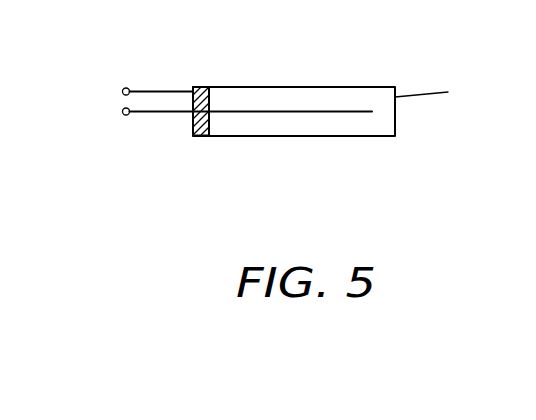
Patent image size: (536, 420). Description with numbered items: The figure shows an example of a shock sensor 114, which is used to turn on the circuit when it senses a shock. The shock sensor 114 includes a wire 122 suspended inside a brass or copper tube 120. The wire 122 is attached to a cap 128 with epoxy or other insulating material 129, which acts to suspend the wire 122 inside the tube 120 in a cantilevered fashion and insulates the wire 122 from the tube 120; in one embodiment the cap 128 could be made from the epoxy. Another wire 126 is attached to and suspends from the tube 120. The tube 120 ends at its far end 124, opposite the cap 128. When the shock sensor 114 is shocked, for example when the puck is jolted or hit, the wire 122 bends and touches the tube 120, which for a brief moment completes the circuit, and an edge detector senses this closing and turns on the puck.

The shock sensor 114 is at (413, 143).
The tube 120 is at (352, 87).
The wire 122 is at (139, 116).
The housing end 124 is at (448, 92).
The wire 126 is at (160, 92).
The cap 128 is at (193, 125).
The insulating material 129 is at (203, 135).